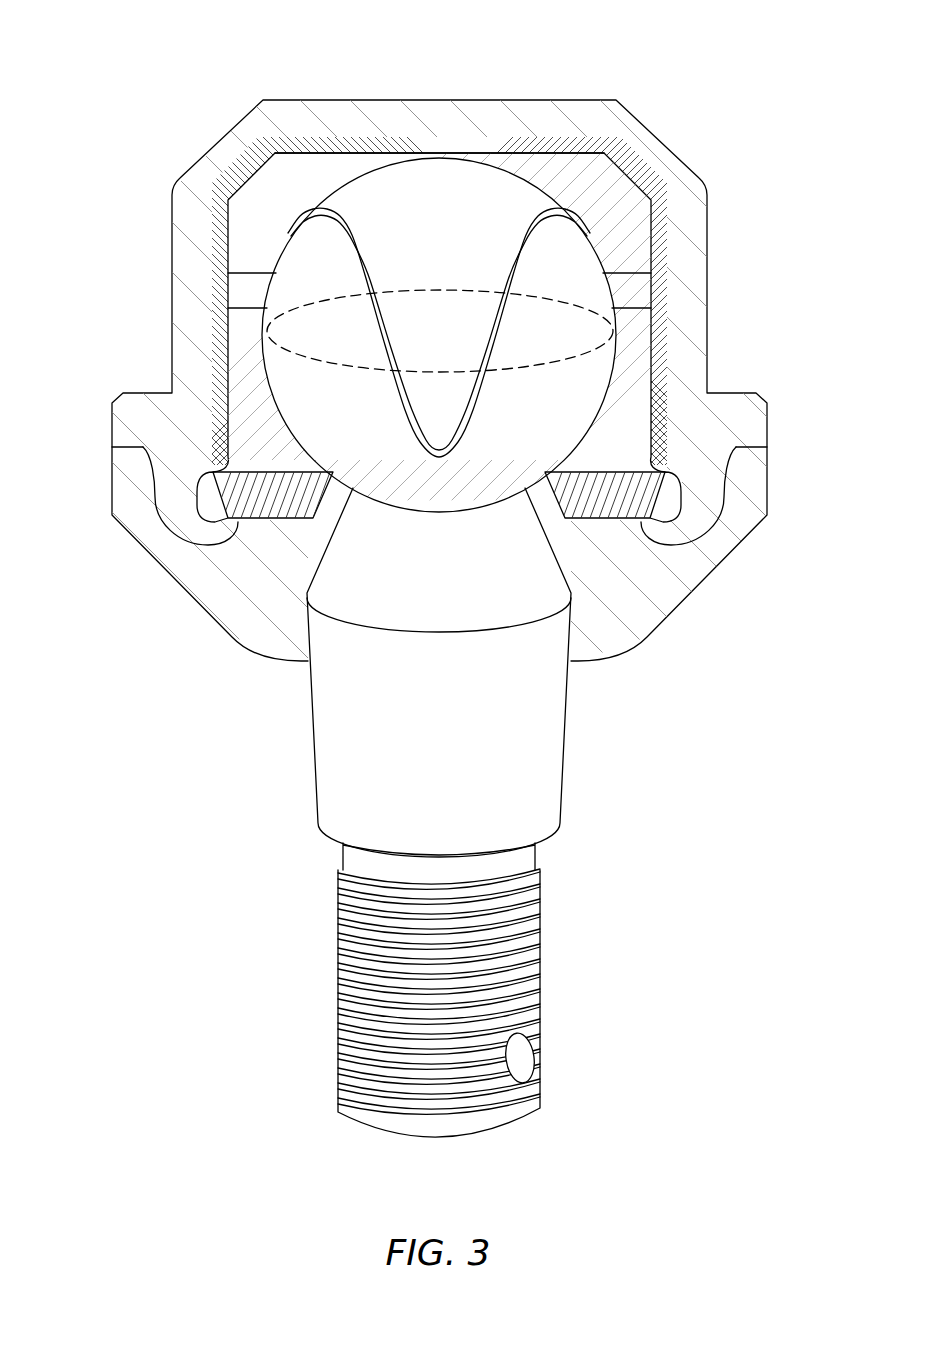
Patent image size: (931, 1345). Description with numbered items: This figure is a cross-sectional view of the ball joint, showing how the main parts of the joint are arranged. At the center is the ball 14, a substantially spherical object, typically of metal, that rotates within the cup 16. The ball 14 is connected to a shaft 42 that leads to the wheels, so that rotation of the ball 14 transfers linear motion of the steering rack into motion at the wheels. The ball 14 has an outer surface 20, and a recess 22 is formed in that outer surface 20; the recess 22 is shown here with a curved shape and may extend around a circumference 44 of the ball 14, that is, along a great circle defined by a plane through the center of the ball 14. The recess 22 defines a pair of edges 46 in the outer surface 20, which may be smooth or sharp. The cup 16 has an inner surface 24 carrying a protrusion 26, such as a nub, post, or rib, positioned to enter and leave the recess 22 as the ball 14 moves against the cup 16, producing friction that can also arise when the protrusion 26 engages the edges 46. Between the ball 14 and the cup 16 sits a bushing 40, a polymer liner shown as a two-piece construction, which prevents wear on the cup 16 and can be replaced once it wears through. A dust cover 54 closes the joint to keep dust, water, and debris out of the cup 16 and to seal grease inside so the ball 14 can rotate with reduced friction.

The ball 14 is at (580, 290).
The cup 16 is at (653, 137).
The outer surface 20 is at (523, 471).
The recess 22 is at (475, 421).
The inner surface 24 is at (507, 150).
The protrusion 26 is at (448, 142).
The bushing 40 is at (322, 162).
The shaft 42 is at (537, 777).
The circumference 44 is at (333, 363).
The edges 46 is at (370, 270).
The dust cover 54 is at (647, 587).